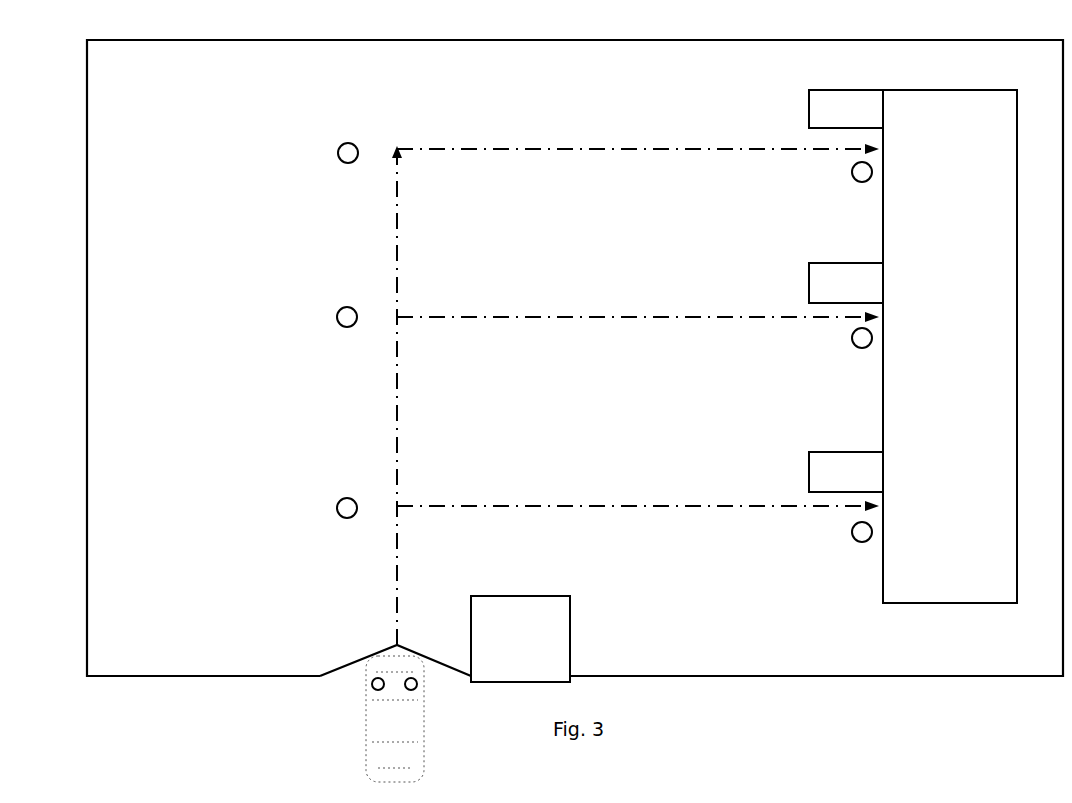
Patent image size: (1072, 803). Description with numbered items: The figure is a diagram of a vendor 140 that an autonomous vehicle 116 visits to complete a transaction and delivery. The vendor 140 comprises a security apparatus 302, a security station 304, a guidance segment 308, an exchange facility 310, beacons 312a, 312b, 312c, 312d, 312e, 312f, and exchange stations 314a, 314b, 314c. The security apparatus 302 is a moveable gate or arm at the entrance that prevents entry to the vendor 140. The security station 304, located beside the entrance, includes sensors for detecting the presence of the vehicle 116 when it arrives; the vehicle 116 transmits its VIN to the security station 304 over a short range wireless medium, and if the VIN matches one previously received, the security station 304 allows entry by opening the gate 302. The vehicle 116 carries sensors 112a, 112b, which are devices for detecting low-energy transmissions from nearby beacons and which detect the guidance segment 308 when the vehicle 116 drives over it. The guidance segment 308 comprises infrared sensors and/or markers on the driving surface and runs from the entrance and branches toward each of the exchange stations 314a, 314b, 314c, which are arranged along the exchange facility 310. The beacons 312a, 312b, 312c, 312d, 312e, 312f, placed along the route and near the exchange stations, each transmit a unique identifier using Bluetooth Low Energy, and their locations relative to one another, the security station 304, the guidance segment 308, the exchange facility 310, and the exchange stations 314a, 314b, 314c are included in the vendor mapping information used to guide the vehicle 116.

The vendor 140 is at (872, 683).
The security apparatus 302 is at (343, 662).
The security station 304 is at (537, 669).
The guidance segment 308 is at (400, 237).
The exchange facility 310 is at (968, 382).
The beacon 312a is at (338, 153).
The beacon 312b is at (337, 317).
The beacon 312c is at (337, 508).
The beacon 312d is at (860, 183).
The beacon 312e is at (860, 349).
The beacon 312f is at (860, 543).
The exchange station 314a is at (870, 119).
The exchange station 314b is at (870, 293).
The exchange station 314c is at (870, 482).
The sensor 112a is at (418, 687).
The sensor 112b is at (372, 687).
The vehicle 116 is at (365, 750).